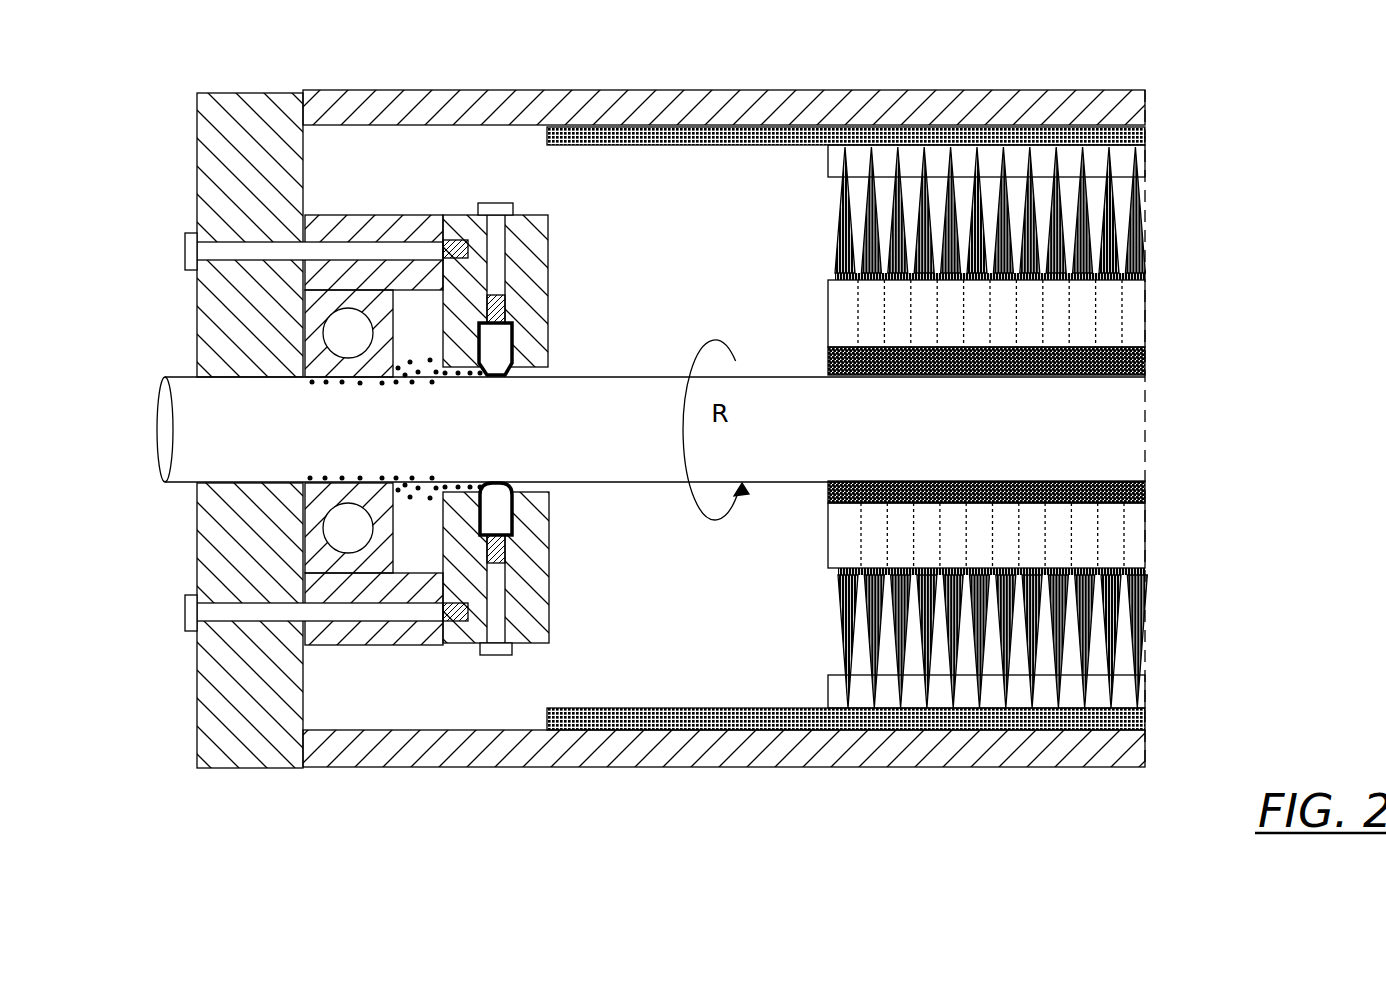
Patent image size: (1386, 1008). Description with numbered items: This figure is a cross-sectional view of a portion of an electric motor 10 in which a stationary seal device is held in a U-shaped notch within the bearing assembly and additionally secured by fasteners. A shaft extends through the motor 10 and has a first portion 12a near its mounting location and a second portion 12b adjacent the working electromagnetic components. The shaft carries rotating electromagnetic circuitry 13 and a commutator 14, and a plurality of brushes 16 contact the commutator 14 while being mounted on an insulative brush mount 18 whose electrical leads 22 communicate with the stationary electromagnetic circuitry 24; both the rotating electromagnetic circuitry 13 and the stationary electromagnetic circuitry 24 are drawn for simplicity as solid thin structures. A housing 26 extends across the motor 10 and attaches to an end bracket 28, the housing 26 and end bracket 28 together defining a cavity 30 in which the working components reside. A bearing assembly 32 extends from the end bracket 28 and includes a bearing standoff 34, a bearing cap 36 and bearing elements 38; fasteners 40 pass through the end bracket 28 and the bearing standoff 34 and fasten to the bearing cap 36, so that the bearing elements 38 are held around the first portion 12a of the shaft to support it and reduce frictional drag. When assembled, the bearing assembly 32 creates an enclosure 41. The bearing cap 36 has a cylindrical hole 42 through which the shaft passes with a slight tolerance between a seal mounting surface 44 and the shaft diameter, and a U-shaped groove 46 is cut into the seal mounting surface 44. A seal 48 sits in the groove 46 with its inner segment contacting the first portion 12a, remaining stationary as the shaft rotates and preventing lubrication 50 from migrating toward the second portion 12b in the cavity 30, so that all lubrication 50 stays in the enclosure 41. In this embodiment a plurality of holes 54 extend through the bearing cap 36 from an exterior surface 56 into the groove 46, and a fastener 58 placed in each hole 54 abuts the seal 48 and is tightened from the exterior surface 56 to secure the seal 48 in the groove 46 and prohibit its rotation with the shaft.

The motor 10 is at (612, 62).
The first portion of the shaft 12a is at (300, 430).
The second portion of the shaft 12b is at (805, 431).
The rotating electromagnetic circuitry 13 is at (1118, 355).
The commutator 14 is at (1018, 594).
The brushes 16 is at (1019, 223).
The insulative brush mount 18 is at (1123, 167).
The electrical leads 22 is at (1113, 673).
The stationary electromagnetic circuitry 24 is at (985, 715).
The housing 26 is at (888, 100).
The end bracket 28 is at (215, 148).
The cavity 30 is at (655, 660).
The bearing assembly 32 is at (418, 658).
The bearing standoff 34 is at (373, 645).
The bearing cap 36 is at (475, 237).
The bearing elements 38 is at (304, 301).
The fasteners 40 is at (185, 614).
The enclosure 41 is at (420, 322).
The cylindrical hole 42 is at (530, 374).
The seal mounting surface 44 is at (535, 495).
The U-shaped groove 46 is at (510, 318).
The seal 48 is at (518, 538).
The lubrication 50 is at (325, 382).
The holes 54 is at (505, 262).
The exterior surface 56 is at (513, 657).
The fastener 58 is at (515, 570).